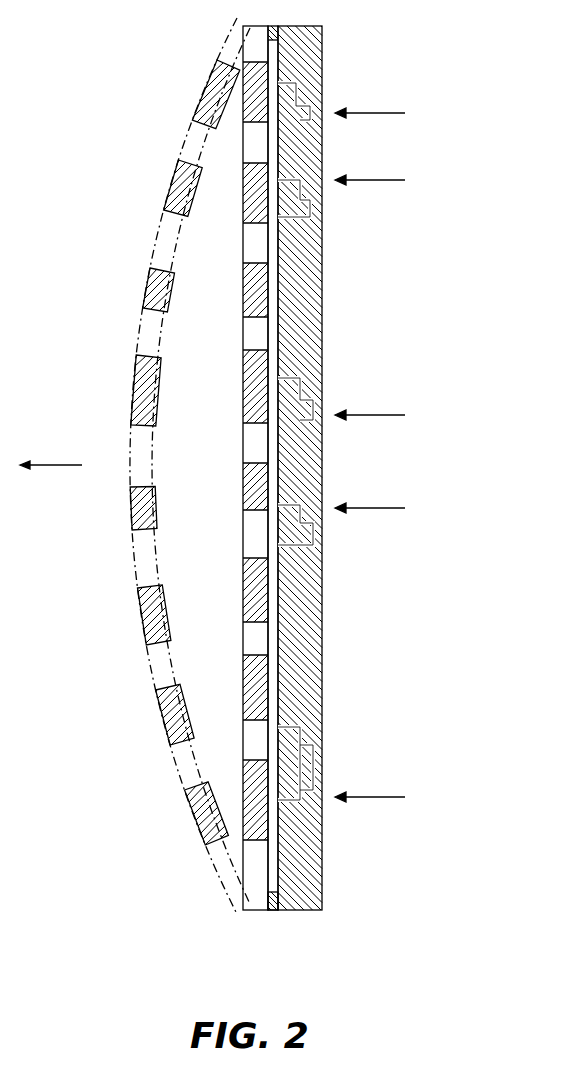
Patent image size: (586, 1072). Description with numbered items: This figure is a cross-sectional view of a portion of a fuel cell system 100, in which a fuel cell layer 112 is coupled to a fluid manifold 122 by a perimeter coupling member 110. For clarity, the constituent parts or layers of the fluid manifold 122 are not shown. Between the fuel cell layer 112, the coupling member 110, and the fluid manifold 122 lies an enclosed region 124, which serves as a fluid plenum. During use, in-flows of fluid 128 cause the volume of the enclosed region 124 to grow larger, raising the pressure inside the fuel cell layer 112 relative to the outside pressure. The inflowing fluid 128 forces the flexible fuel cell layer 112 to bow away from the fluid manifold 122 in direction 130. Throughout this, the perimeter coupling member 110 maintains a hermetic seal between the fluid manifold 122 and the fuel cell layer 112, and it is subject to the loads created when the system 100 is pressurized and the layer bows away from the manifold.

The system 100 is at (104, 51).
The perimeter coupling member 110 is at (275, 911).
The fuel cell layer 112 is at (258, 881).
The fluid manifold 122 is at (351, 468).
The enclosed region 124 is at (212, 477).
The fluid 128 is at (370, 413).
The direction 130 is at (72, 465).